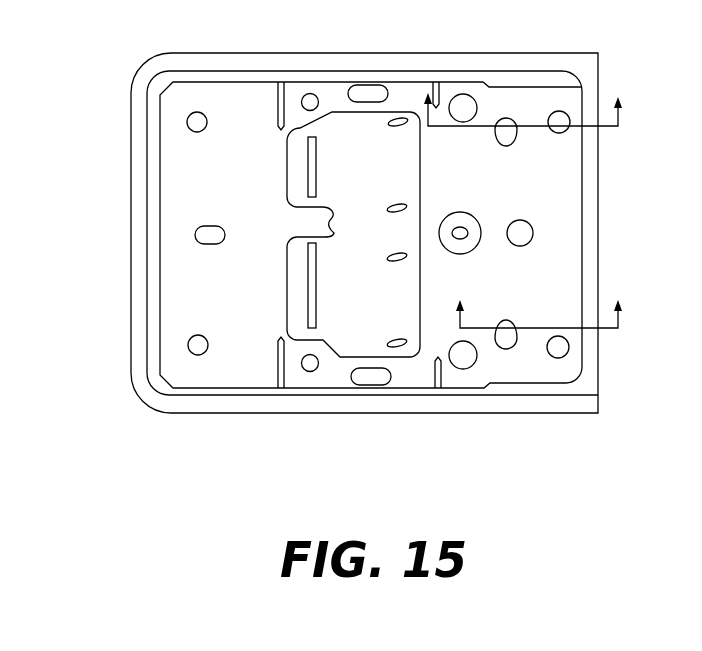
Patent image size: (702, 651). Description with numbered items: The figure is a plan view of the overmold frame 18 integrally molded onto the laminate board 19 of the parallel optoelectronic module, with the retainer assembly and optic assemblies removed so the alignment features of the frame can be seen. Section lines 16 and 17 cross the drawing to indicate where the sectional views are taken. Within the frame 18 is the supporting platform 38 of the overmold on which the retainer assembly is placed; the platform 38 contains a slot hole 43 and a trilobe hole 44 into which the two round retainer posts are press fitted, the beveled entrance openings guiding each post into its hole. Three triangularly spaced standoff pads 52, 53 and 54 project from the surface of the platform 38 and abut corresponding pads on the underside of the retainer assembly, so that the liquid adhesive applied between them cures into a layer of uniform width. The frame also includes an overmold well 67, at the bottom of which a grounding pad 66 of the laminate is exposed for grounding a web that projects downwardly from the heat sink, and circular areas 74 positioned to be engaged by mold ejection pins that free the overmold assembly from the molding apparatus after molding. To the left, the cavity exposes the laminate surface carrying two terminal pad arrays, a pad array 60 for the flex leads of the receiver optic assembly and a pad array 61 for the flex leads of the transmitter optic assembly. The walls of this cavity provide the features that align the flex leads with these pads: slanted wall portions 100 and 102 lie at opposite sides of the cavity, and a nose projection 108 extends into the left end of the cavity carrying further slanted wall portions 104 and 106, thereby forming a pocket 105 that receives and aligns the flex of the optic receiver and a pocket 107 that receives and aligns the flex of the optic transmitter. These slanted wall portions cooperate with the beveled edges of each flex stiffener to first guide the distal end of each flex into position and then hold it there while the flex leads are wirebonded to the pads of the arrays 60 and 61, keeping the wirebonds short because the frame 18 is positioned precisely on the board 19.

The overmold frame 18 is at (138, 316).
The laminate board 19 is at (201, 406).
The supporting platform 38 is at (568, 272).
The slanted wall portion 100 is at (333, 351).
The slanted wall portion 102 is at (333, 113).
The slanted wall portion 104 is at (328, 210).
The slanted wall portion 106 is at (333, 233).
The nose projection 108 is at (295, 222).
The pocket 107 is at (298, 156).
The pocket 105 is at (298, 300).
The pad array 61 is at (316, 165).
The pad array 60 is at (316, 268).
The standoff pad 52 is at (460, 94).
The standoff pad 54 is at (463, 369).
The trilobe hole 44 is at (507, 119).
The slot hole 43 is at (513, 349).
The circular areas 74 is at (568, 118).
The standoff pad 53 is at (533, 233).
The grounding pad 66 is at (460, 226).
The overmold well 67 is at (472, 250).
The section line 16- 16 is at (528, 102).
The section line 17- 17 is at (544, 310).